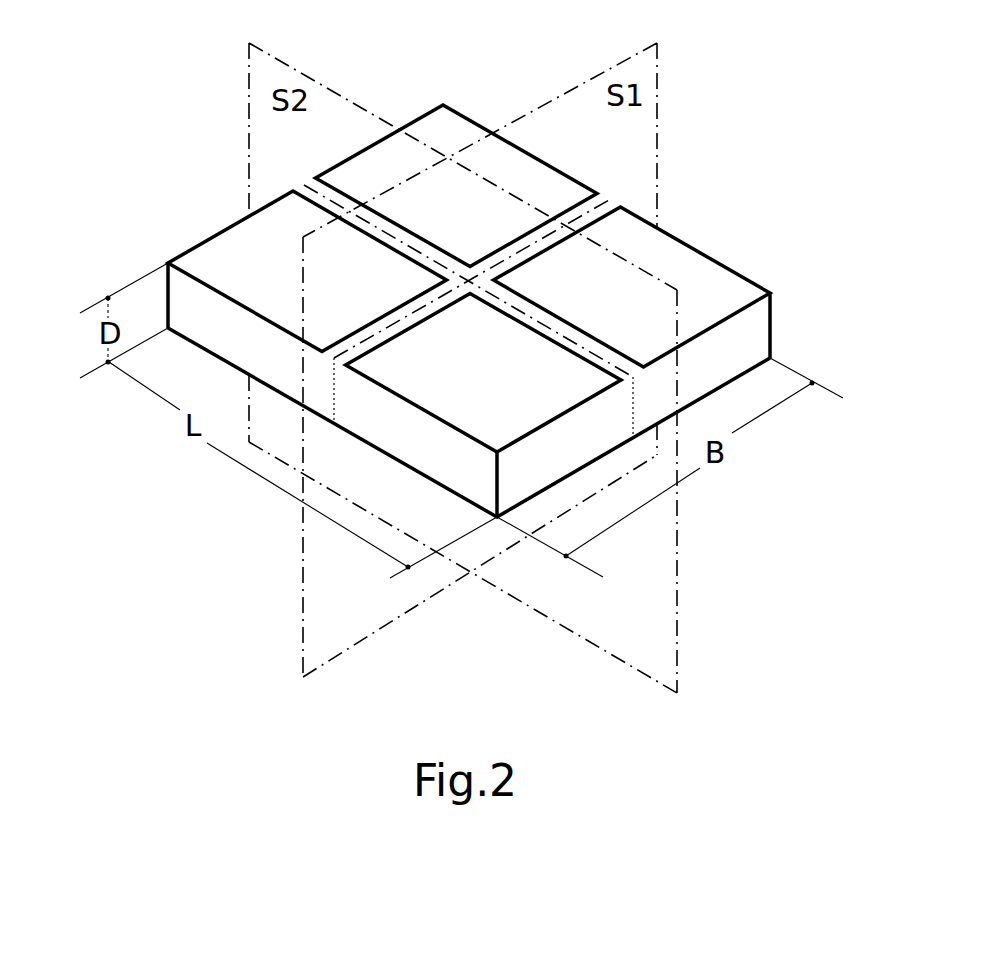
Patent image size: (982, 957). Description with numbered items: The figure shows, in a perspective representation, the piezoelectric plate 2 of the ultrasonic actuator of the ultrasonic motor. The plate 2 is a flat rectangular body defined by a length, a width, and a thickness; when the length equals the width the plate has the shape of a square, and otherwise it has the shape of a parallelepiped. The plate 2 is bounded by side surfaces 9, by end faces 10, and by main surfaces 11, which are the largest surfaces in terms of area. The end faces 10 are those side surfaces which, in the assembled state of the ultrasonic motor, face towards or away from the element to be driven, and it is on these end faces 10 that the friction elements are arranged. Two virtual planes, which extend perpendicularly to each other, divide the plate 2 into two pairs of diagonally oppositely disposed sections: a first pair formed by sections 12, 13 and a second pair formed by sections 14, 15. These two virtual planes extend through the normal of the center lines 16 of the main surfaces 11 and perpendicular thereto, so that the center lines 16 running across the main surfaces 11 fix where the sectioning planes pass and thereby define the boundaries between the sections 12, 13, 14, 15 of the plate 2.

The piezoelectric plate 2 is at (688, 148).
The side surfaces 9 is at (695, 360).
The end faces 10 is at (557, 172).
The main surfaces 11 is at (713, 392).
The section 12 is at (468, 205).
The section 13 is at (453, 375).
The section 14 is at (635, 307).
The section 15 is at (278, 270).
The center lines 16 is at (556, 328).